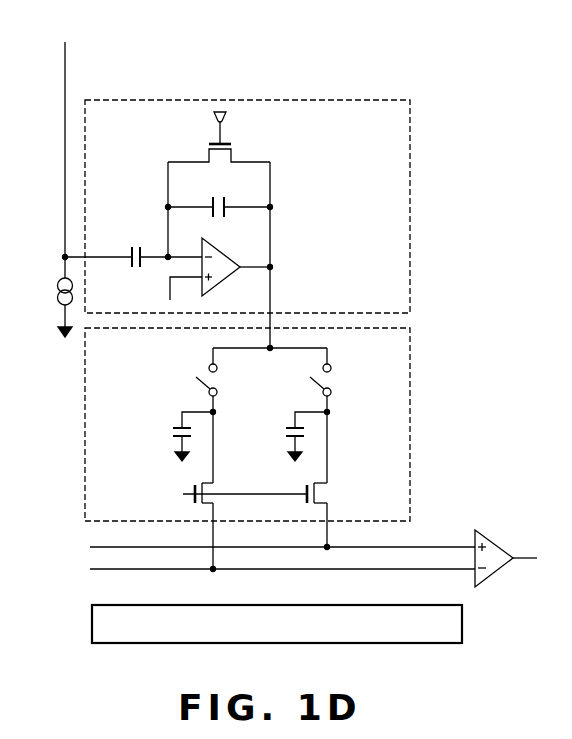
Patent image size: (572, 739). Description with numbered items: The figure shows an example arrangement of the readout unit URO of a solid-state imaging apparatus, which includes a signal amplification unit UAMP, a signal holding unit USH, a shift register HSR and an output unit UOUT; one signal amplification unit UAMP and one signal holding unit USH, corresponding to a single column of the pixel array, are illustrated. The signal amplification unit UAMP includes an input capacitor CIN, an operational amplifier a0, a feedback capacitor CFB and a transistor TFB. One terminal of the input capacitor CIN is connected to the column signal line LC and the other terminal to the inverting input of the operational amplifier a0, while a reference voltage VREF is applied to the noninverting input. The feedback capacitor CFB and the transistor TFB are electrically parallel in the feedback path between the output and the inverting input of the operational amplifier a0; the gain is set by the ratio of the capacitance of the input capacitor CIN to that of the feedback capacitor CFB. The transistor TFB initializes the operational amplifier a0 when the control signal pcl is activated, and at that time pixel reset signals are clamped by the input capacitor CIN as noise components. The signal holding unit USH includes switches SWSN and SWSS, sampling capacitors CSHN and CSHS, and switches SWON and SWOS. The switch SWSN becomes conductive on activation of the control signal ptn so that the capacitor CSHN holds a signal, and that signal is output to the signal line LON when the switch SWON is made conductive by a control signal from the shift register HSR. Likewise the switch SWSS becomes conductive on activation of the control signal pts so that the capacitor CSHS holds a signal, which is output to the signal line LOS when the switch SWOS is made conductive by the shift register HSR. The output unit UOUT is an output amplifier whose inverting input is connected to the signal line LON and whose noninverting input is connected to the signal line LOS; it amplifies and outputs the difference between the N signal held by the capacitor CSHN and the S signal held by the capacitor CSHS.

The column signal line LC is at (64, 78).
The readout unit URO is at (272, 57).
The signal amplification unit UAMP is at (410, 125).
The signal holding unit USH is at (410, 350).
The control signal pcl is at (201, 128).
The transistor TFB is at (237, 147).
The feedback capacitor CFB is at (229, 198).
The input capacitor CIN is at (133, 245).
The operational amplifier a0 is at (218, 243).
The reference voltage VREF is at (160, 291).
The control signal ptn is at (186, 378).
The control signal pts is at (300, 378).
The switch SWSN is at (218, 378).
The switch SWSS is at (348, 415).
The sampling capacitor CSHN is at (163, 436).
The sampling capacitor CSHS is at (313, 435).
The switch SWON is at (186, 484).
The switch SWOS is at (345, 516).
The signal line LOS is at (98, 547).
The signal line LON is at (98, 569).
The output unit UOUT is at (500, 519).
The shift register HSR is at (277, 624).